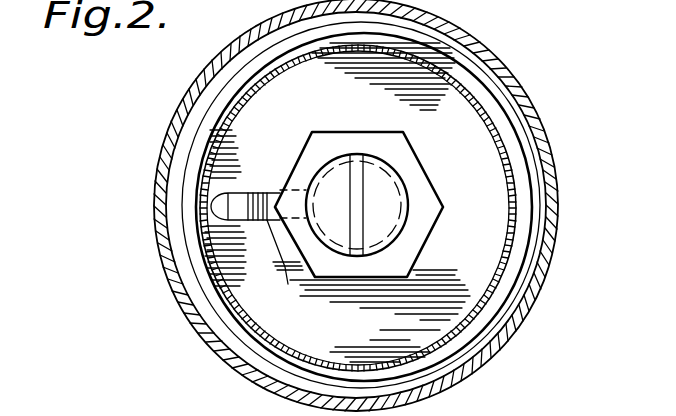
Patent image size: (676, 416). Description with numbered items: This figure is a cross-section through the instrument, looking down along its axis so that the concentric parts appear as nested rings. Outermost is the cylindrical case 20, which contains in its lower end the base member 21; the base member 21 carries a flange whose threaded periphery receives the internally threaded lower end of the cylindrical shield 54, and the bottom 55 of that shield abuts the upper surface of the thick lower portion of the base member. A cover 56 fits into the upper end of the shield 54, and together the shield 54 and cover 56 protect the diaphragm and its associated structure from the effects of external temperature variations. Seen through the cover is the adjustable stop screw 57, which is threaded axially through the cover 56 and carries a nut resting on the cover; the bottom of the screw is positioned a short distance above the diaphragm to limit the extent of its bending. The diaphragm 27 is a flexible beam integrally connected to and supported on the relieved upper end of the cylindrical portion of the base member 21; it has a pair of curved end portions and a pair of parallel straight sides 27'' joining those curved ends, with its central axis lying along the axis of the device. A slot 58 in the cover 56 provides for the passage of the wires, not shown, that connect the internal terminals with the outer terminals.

The cylindrical case 20 is at (251, 28).
The base member 21 is at (539, 176).
The diaphragm 27 is at (273, 265).
The straight sides 27'' is at (258, 227).
The cylindrical shield 54 is at (442, 69).
The bottom of shield 55 is at (537, 247).
The cover 56 is at (272, 151).
The adjustable stop screw 57 is at (336, 132).
The slot 58 is at (236, 197).